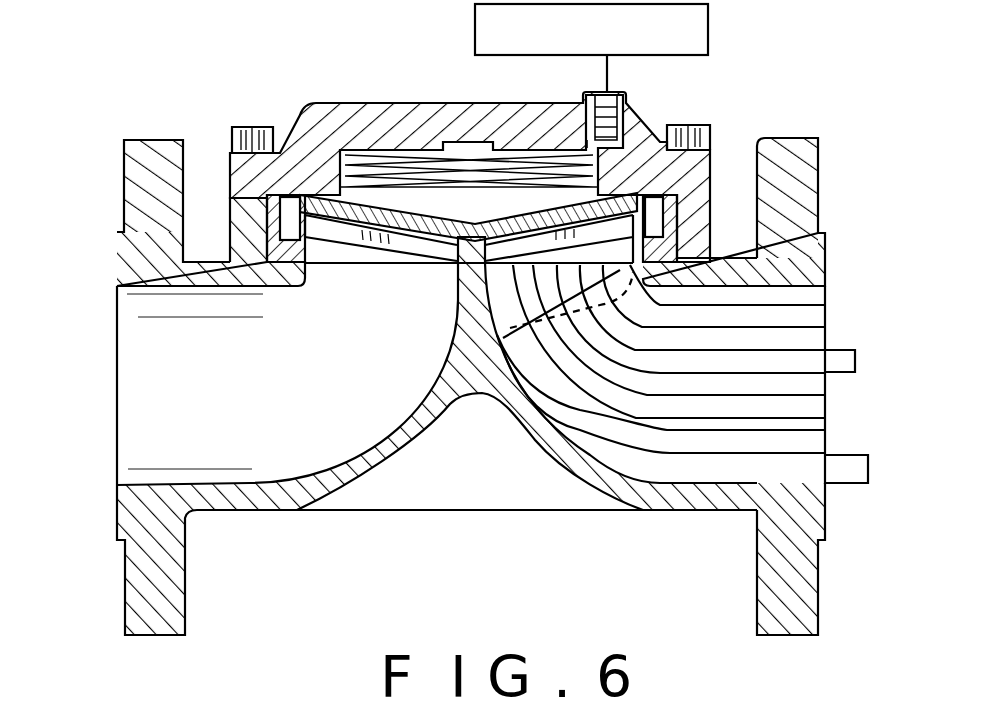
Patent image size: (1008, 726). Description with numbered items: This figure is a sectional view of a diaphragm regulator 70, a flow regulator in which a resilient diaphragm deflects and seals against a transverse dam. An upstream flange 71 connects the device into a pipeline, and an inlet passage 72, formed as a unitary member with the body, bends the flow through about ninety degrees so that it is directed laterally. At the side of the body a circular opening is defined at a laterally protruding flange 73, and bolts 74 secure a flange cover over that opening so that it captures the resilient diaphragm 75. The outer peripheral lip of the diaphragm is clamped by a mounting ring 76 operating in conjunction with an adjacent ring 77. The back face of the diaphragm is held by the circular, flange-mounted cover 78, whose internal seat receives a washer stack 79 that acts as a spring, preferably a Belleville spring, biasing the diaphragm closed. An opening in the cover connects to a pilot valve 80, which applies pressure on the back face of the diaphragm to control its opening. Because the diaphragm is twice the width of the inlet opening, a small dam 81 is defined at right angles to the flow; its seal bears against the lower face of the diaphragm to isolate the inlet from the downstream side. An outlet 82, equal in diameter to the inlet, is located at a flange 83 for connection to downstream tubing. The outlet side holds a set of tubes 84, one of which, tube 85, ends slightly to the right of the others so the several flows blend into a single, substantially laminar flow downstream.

The diaphragm regulator 70 is at (397, 548).
The upstream flange 71 is at (142, 637).
The inlet passage 72 is at (187, 483).
The laterally protruding flange 73 is at (230, 213).
The bolts 74 is at (240, 127).
The resilient diaphragm 75 is at (328, 207).
The mounting ring 76 is at (275, 265).
The adjacent ring 77 is at (277, 242).
The cover 78 is at (320, 102).
The washer stack 79 is at (426, 153).
The pilot valve 80 is at (475, 31).
The dam 81 is at (458, 272).
The outlet 82 is at (818, 262).
The flange 83 is at (807, 173).
The set of tubes 84 is at (543, 453).
The tube 85 is at (793, 363).